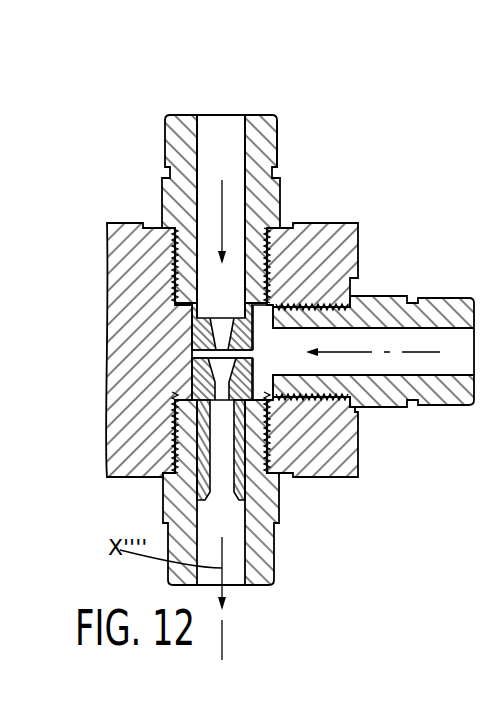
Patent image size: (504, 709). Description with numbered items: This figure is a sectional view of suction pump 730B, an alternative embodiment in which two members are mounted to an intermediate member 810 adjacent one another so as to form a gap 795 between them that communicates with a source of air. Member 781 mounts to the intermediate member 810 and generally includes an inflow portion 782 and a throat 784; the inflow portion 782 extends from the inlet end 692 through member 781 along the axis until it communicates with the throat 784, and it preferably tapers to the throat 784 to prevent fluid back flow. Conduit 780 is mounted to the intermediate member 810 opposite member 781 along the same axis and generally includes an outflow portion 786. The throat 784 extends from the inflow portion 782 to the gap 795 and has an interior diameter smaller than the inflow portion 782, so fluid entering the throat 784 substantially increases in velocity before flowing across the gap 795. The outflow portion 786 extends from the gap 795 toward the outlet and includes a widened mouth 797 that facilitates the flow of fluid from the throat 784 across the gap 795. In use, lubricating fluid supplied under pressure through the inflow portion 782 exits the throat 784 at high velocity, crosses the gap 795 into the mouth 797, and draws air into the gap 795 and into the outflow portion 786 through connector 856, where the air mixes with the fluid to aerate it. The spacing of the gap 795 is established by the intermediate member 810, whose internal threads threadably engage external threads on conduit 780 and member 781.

The suction pump 730B is at (93, 168).
The inlet end 692 is at (268, 92).
The inflow portion 782 is at (198, 157).
The member 781 is at (282, 202).
The throat 784 is at (227, 322).
The gap 795 is at (227, 352).
The widened mouth 797 is at (217, 366).
The outflow portion 786 is at (212, 383).
The connector 856 is at (380, 407).
The intermediate member 810 is at (322, 480).
The conduit 780 is at (277, 556).